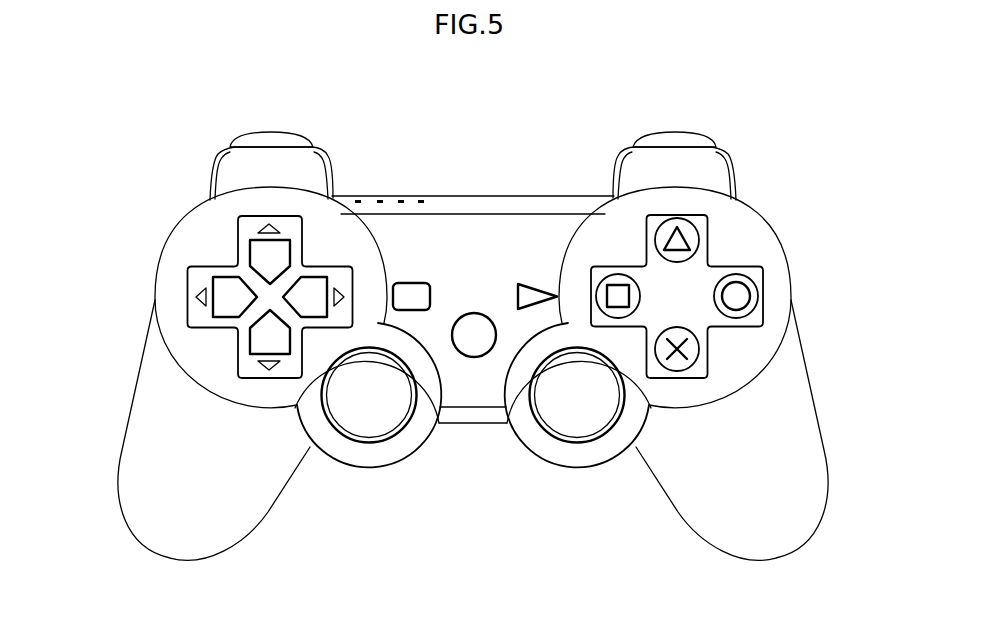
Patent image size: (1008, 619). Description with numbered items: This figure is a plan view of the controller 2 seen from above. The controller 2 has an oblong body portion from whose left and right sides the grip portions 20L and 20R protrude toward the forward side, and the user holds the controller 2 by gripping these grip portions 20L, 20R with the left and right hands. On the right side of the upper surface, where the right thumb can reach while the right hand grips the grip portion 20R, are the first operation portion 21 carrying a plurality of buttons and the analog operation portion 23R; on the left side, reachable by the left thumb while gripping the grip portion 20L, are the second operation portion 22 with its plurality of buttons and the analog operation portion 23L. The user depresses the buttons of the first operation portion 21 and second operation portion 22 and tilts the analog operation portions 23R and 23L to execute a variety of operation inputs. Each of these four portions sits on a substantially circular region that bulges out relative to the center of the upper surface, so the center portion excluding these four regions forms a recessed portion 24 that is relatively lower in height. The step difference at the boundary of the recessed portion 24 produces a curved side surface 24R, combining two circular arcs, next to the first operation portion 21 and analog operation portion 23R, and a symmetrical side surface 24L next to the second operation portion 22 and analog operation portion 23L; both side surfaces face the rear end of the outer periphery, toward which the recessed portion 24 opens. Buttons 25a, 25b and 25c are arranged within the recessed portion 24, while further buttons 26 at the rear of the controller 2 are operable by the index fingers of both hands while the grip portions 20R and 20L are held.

The controller 2 is at (473, 529).
The grip portion 20L is at (150, 432).
The grip portion 20R is at (796, 432).
The first operation portion 21 is at (729, 245).
The second operation portion 22 is at (217, 245).
The analog operation portion 23L is at (370, 438).
The analog operation portion 23R is at (576, 438).
The recessed portion 24 is at (470, 243).
The side surface 24L is at (365, 238).
The side surface 24R is at (582, 238).
The button 25a is at (408, 283).
The button 25b is at (528, 283).
The button 25c is at (473, 312).
The buttons 26 is at (265, 132).